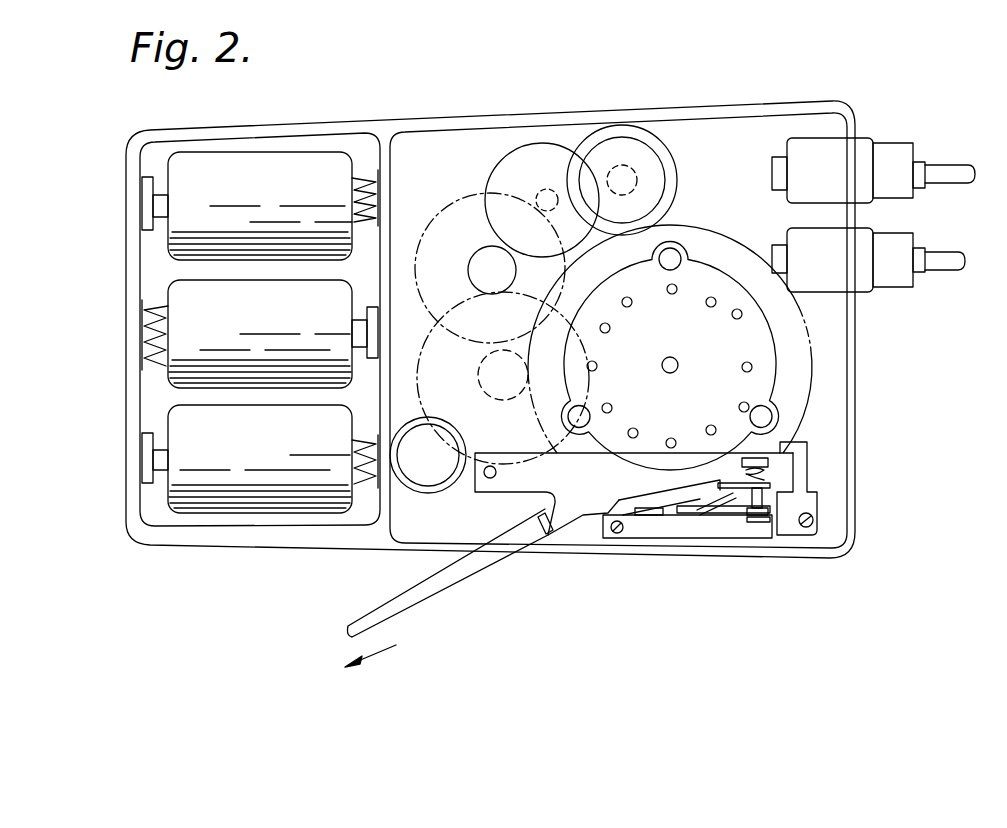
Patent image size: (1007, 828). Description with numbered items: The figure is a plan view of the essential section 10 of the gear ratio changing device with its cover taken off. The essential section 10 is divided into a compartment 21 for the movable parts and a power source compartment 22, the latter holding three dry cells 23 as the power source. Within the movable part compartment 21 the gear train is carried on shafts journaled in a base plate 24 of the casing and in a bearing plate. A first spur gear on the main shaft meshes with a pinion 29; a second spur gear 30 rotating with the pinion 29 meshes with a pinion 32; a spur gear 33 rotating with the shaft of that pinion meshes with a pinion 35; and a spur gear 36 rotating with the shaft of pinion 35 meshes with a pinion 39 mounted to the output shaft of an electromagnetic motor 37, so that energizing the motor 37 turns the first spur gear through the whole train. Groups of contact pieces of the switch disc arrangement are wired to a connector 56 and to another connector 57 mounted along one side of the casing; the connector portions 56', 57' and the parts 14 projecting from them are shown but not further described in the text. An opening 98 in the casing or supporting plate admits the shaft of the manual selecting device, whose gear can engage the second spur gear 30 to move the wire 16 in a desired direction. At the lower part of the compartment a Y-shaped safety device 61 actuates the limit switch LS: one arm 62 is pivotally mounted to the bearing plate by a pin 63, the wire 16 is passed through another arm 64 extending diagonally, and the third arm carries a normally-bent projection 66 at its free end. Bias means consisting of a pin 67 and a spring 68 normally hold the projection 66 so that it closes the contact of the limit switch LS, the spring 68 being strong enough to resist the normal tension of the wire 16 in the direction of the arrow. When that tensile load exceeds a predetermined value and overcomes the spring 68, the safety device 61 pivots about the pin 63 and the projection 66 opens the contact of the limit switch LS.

The essential section 10 is at (432, 118).
The push button 14 is at (950, 178).
The wire 16 is at (446, 578).
The movable part compartment 21 is at (703, 118).
The power source compartment 22 is at (272, 143).
The dry cells 23 is at (192, 243).
The base plate 24 is at (808, 368).
The pinion 29 is at (500, 390).
The second spur gear 30 is at (424, 358).
The pinion 32 is at (478, 259).
The spur gear 33 is at (443, 222).
The pinion 35 is at (543, 191).
The spur gear 36 is at (506, 161).
The electromagnetic motor 37 is at (623, 126).
The pinion 39 is at (636, 180).
The connector 56 is at (832, 152).
The switch body 56' is at (912, 156).
The connector 57 is at (833, 279).
The switch body 57' is at (909, 270).
The safety device 61 is at (671, 491).
The arm 62 is at (505, 492).
The pin 63 is at (485, 478).
The arm 64 is at (567, 524).
The projection 66 is at (771, 488).
The pin 67 is at (763, 500).
The spring 68 is at (770, 478).
The opening 98 is at (413, 437).
The limit switch LS is at (722, 524).